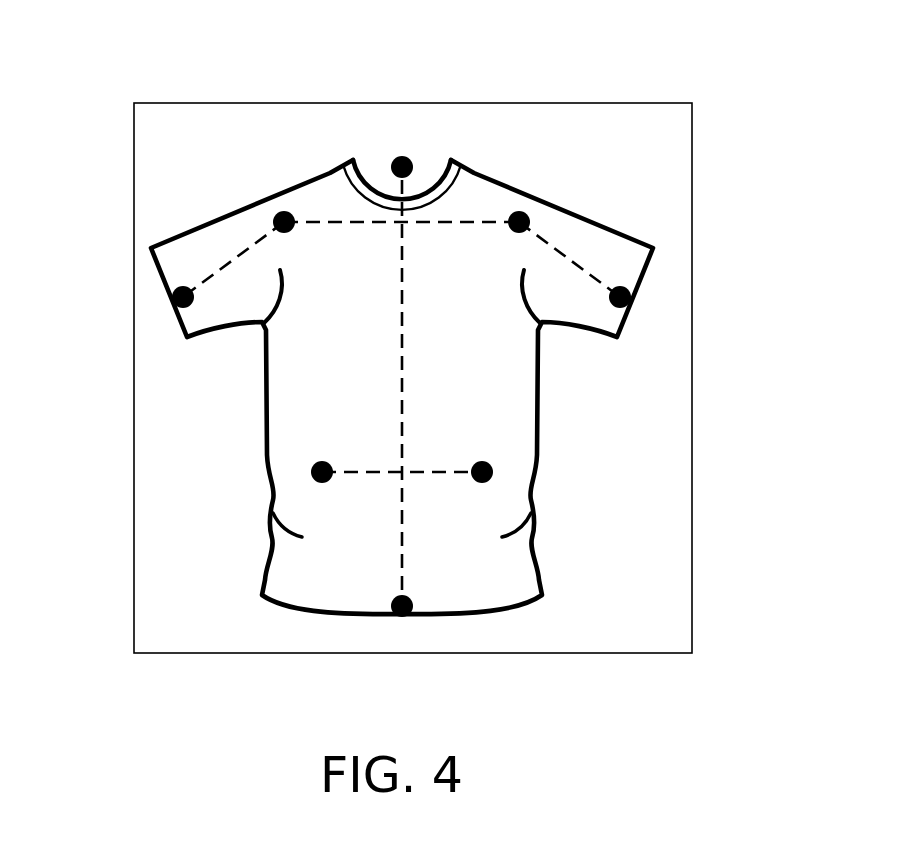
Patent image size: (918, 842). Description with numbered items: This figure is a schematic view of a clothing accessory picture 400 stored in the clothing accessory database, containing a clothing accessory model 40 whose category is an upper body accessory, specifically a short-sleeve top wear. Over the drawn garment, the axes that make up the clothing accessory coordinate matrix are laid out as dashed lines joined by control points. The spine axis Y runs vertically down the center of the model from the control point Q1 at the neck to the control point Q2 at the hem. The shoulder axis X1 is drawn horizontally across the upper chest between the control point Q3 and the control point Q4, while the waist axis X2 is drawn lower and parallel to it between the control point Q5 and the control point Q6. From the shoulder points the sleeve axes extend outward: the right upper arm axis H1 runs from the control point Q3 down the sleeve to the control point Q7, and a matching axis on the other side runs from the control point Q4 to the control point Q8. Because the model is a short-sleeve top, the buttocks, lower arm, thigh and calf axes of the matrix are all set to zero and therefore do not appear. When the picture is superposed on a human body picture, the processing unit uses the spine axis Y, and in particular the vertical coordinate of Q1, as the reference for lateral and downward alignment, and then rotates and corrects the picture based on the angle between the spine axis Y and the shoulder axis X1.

The clothing accessory model 40 is at (468, 142).
The clothing accessory picture 400 is at (692, 593).
The control point Q1 is at (402, 157).
The control point Q2 is at (400, 608).
The control point Q3 is at (278, 217).
The control point Q4 is at (522, 220).
The control point Q5 is at (318, 473).
The control point Q6 is at (490, 472).
The control point Q7 is at (180, 293).
The control point Q8 is at (622, 295).
The spine axis Y is at (397, 192).
The shoulder axis X1 is at (480, 222).
The waist axis X2 is at (445, 470).
The right upper arm axis H1 is at (225, 267).